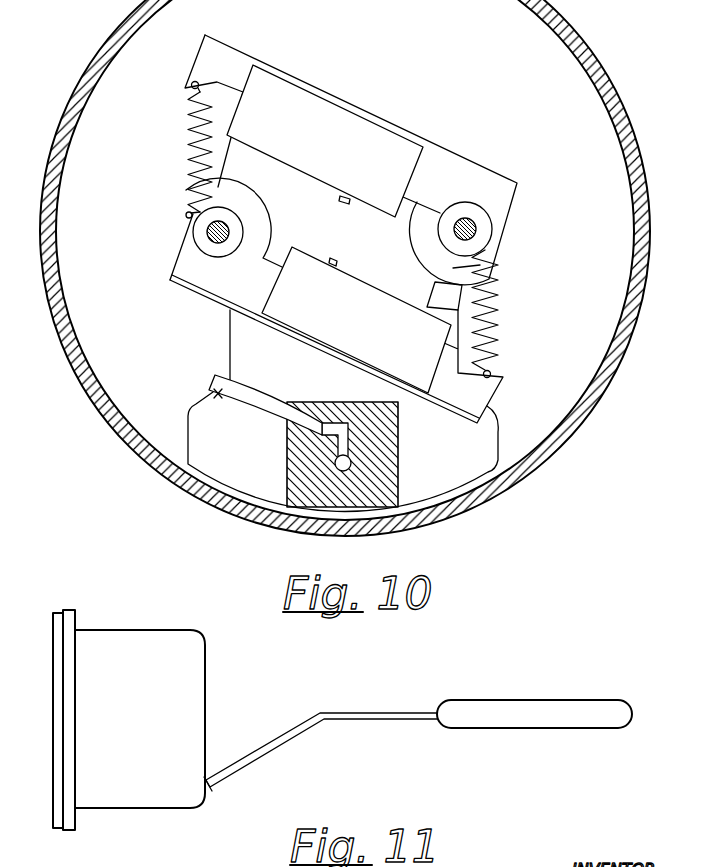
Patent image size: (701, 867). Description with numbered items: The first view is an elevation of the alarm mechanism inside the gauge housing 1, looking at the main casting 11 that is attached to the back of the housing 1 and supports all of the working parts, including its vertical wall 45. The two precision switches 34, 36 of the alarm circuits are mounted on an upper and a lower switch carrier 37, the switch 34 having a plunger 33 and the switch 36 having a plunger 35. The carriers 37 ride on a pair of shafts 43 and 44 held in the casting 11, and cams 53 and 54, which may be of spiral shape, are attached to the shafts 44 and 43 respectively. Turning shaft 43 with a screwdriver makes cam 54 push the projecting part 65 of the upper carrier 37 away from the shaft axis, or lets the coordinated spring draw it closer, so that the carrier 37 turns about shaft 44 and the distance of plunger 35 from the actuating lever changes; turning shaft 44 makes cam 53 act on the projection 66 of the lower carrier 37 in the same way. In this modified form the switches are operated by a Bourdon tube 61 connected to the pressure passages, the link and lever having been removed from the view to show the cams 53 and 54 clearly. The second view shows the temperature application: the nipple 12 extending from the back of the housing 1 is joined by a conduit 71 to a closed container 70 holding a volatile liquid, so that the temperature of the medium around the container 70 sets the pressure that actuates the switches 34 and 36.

In FIG. 10, the housing 1 is at (547, 447).
In FIG. 11, the housing 1 is at (132, 734).
In FIG. 10, the main casting 11 is at (382, 455).
In FIG. 11, the threaded nipple 12 is at (213, 785).
In FIG. 10, the plunger 33 is at (340, 260).
In FIG. 10, the precision switch 34 is at (374, 339).
In FIG. 10, the plunger 35 is at (346, 199).
In FIG. 10, the precision switch 36 is at (333, 156).
In FIG. 10, the switch carrier 37 is at (240, 290).
In FIG. 10, the shaft 43 is at (209, 228).
In FIG. 10, the shaft 44 is at (474, 221).
In FIG. 10, the vertical wall 45 is at (304, 387).
In FIG. 10, the cam 53 is at (455, 268).
In FIG. 10, the cam 54 is at (222, 187).
In FIG. 10, the Bourdon tube 61 is at (218, 394).
In FIG. 10, the projecting part 65 is at (230, 163).
In FIG. 10, the projection 66 is at (450, 312).
In FIG. 11, the closed container 70 is at (544, 727).
In FIG. 11, the conduit 71 is at (293, 730).